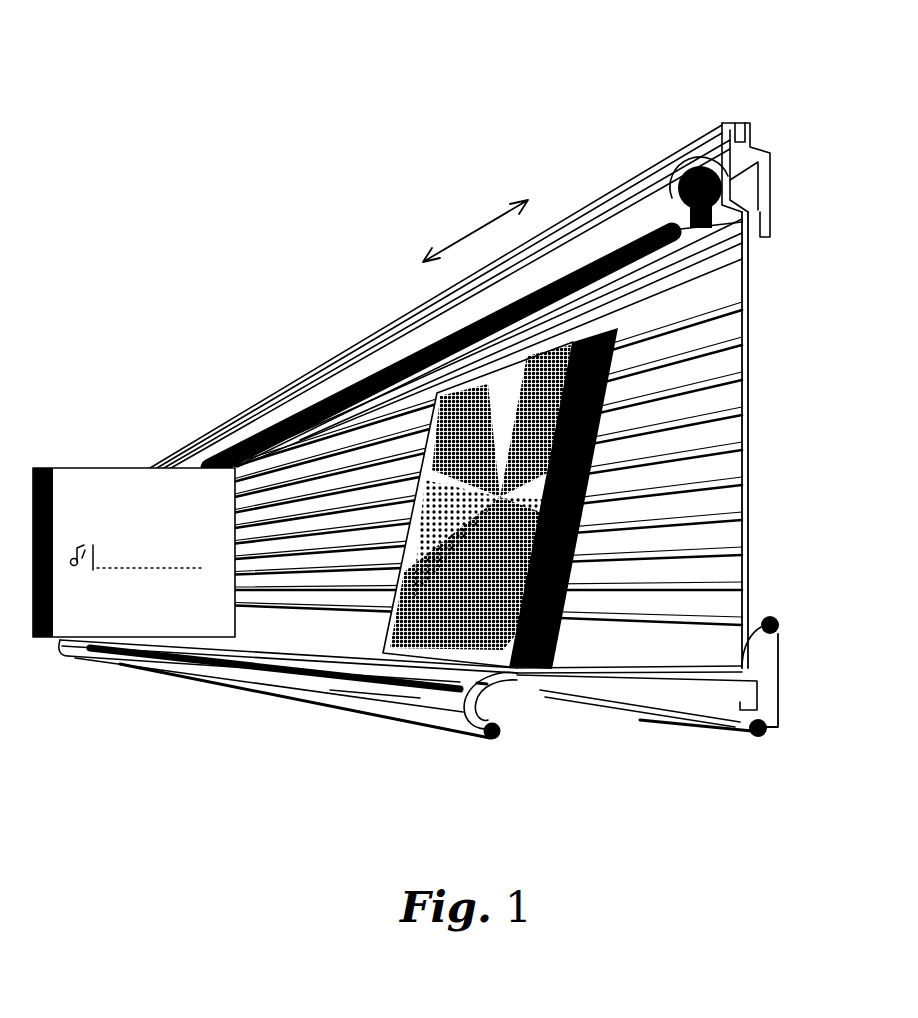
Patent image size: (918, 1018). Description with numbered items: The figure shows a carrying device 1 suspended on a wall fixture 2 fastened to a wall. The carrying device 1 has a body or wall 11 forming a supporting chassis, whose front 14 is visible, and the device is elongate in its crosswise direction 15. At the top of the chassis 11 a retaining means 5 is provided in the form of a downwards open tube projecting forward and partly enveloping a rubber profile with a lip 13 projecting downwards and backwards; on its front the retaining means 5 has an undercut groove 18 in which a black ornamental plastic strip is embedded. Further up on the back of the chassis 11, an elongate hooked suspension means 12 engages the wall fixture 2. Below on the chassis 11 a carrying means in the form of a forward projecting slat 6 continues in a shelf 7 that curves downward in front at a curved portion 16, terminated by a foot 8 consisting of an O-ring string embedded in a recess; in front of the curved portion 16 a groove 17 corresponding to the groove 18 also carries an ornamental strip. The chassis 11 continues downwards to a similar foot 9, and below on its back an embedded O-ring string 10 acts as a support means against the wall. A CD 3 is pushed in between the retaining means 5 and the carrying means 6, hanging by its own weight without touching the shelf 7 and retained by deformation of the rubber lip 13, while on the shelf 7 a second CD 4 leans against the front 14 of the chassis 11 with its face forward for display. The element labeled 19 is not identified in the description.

The carrying device 1 is at (318, 268).
The wall fixture 2 is at (770, 178).
The CD 3 is at (92, 490).
The CD 4 is at (560, 604).
The retaining means 5 is at (640, 227).
The carrying means (slat) 6 is at (722, 665).
The shelf 7 is at (553, 680).
The foot 8 is at (423, 733).
The foot 9 is at (737, 737).
The O-ring string 10 is at (782, 625).
The chassis (wall) 11 is at (742, 405).
The hooked suspension means 12 is at (735, 123).
The lip 13 is at (693, 226).
The front 14 is at (722, 347).
The crosswise direction 15 is at (463, 225).
The curve (curved portion) 16 is at (260, 710).
The groove 17 is at (335, 678).
The undercut groove 18 is at (677, 182).
The lower strip 19 is at (727, 703).